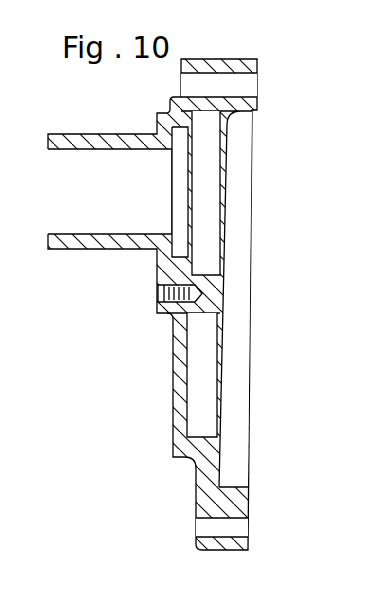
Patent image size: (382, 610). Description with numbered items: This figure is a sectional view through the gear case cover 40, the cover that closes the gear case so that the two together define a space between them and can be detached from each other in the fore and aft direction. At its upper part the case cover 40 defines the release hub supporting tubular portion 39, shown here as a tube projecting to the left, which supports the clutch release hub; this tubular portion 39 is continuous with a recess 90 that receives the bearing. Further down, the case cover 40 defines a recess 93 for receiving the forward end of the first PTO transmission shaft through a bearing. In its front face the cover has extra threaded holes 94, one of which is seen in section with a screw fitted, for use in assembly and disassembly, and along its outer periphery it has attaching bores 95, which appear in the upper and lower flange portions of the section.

The tubular support portion 39 is at (92, 252).
The case cover 40 is at (168, 384).
The recess 90 is at (229, 121).
The recess 93 is at (188, 405).
The extra threaded holes 94 is at (156, 297).
The attaching bores 95 is at (246, 83).